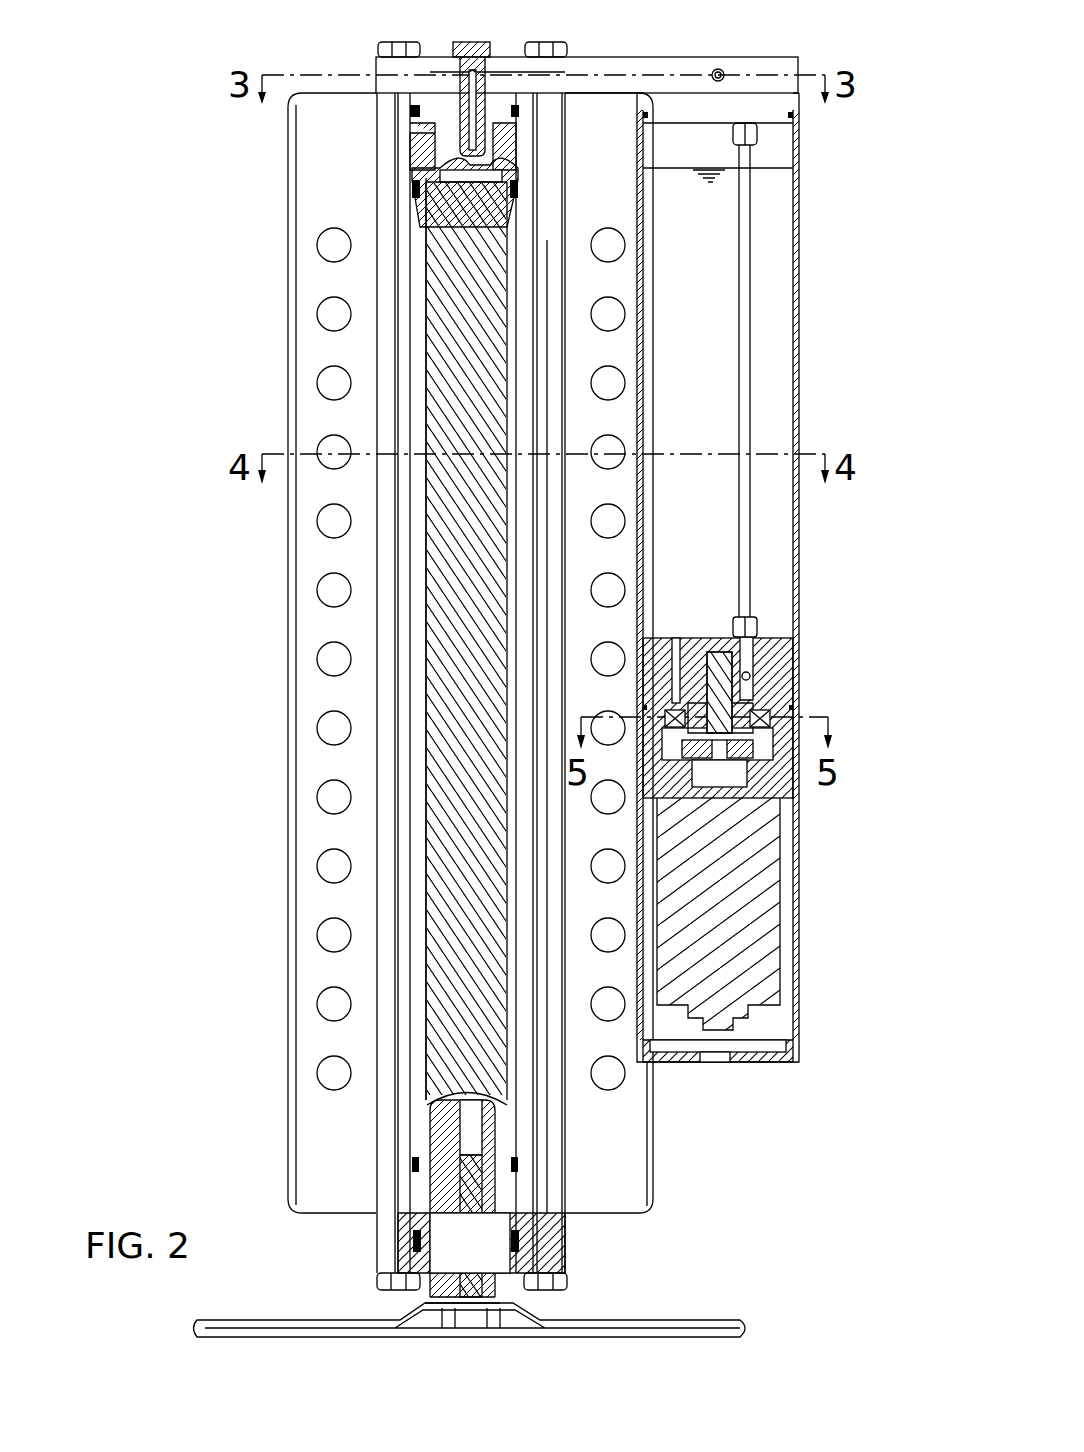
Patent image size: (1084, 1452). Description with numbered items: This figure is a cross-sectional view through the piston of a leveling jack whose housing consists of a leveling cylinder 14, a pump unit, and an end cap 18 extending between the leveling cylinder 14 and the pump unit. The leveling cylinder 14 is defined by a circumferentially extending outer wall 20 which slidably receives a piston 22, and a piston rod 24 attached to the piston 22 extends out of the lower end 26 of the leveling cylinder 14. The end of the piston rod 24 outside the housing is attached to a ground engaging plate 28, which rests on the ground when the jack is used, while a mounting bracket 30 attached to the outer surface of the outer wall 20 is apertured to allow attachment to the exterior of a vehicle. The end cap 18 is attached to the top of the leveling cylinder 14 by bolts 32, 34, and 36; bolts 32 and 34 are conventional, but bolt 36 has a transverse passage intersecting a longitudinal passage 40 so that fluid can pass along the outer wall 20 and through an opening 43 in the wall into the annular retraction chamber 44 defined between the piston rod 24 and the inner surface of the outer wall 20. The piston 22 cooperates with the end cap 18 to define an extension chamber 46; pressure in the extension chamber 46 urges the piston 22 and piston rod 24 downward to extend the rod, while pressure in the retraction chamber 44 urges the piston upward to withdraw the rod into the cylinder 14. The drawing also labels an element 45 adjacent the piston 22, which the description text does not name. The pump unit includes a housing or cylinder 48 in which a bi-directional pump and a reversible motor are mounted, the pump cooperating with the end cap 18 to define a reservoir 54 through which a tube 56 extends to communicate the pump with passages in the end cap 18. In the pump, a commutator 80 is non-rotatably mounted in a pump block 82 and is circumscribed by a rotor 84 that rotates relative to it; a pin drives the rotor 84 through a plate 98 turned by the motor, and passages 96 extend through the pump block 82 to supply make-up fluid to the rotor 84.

The leveling cylinder 14 is at (394, 314).
The end cap 18 is at (680, 72).
The outer wall 20 is at (540, 216).
The piston 22 is at (420, 205).
The piston rod 24 is at (442, 830).
The lower end 26 is at (530, 1295).
The ground engaging plate 28 is at (700, 1326).
The mounting bracket 30 is at (312, 1045).
The bolt 32 is at (388, 48).
The bolt 34 is at (568, 52).
The bolt 36 is at (478, 50).
The longitudinal passage 40 is at (470, 123).
The opening 43 is at (474, 1126).
The annular retraction chamber 44 is at (422, 598).
The seal 45 is at (452, 168).
The extension chamber 46 is at (432, 120).
The housing or cylinder 48 is at (800, 394).
The reservoir 54 is at (778, 242).
The tube 56 is at (748, 332).
The commutator 80 is at (720, 656).
The pump block 82 is at (776, 666).
The rotor 84 is at (762, 706).
The passages 96 is at (678, 652).
The plate 98 is at (746, 746).